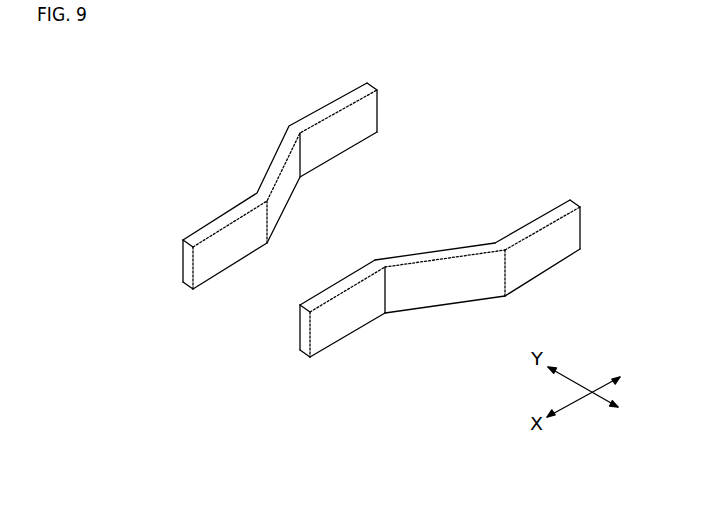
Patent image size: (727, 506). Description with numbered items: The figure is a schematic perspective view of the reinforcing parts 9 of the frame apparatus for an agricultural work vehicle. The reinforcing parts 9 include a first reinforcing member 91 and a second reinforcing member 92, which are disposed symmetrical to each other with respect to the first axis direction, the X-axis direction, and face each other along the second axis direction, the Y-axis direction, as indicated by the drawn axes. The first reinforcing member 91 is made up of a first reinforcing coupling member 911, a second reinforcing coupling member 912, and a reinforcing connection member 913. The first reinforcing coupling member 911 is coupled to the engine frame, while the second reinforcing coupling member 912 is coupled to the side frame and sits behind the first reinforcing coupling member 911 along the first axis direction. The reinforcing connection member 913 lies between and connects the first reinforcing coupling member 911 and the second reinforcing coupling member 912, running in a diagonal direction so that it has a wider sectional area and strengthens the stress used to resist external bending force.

The reinforcing parts 9 is at (152, 91).
The first reinforcing member 91 is at (350, 340).
The first reinforcing coupling member 911 is at (331, 320).
The second reinforcing coupling member 912 is at (550, 240).
The reinforcing connection member 913 is at (440, 277).
The second reinforcing member 92 is at (203, 216).